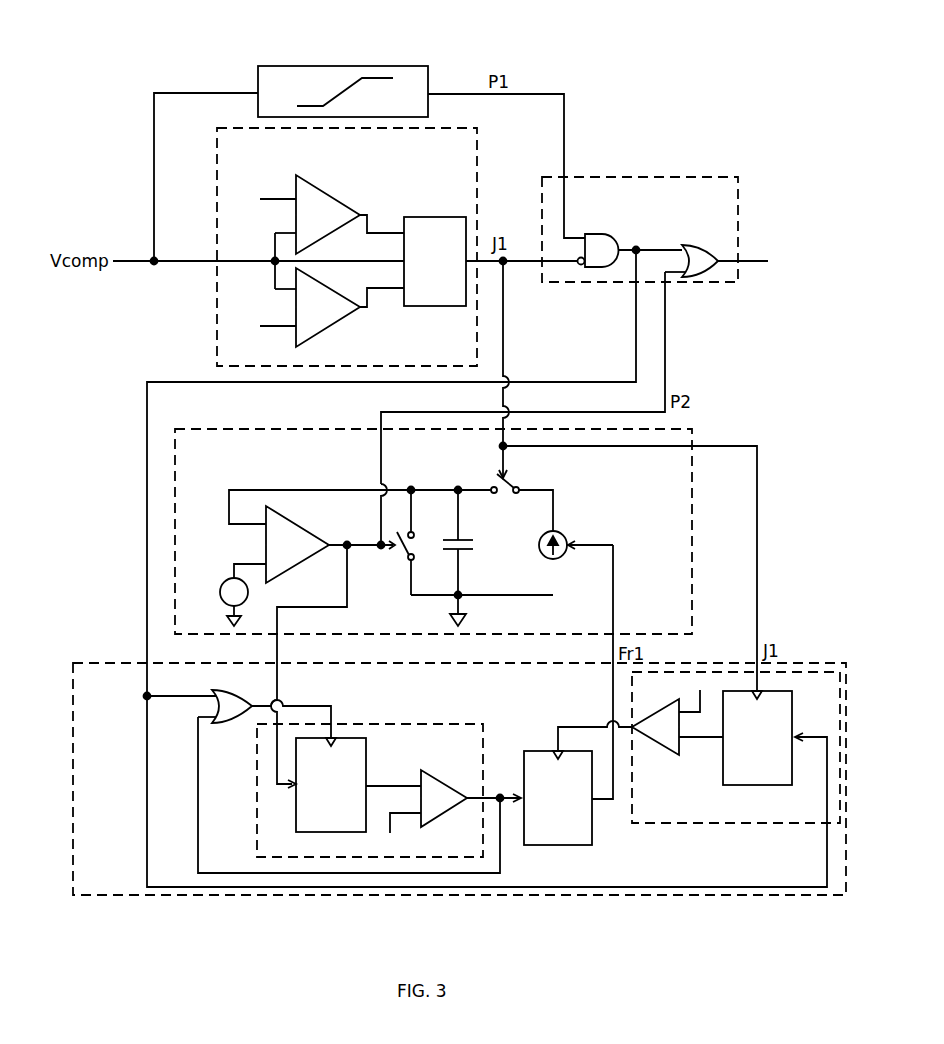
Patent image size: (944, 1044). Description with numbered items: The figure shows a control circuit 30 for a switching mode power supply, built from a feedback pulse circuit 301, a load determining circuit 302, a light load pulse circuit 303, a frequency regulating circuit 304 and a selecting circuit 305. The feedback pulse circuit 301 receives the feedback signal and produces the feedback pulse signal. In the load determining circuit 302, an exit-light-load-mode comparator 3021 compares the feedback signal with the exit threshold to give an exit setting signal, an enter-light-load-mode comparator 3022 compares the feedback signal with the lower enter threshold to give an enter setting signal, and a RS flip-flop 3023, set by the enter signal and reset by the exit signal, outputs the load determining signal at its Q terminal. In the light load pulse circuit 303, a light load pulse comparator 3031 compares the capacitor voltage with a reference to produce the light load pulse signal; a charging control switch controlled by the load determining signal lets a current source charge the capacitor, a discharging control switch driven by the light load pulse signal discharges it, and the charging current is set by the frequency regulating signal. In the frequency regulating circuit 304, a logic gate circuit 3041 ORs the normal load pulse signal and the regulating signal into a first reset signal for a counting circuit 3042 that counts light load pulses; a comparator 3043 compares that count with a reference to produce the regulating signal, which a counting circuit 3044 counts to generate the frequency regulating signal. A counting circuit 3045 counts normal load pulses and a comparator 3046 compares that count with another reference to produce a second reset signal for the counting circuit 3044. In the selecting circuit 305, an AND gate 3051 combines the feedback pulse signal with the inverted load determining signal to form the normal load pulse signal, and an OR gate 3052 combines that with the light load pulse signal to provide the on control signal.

The control circuit 30 is at (780, 42).
The feedback pulse circuit 301 is at (327, 66).
The load determining circuit 302 is at (347, 247).
The exit-light-load-mode comparator 3021 is at (340, 183).
The enter-light-load-mode comparator 3022 is at (340, 277).
The RS flip-flop 3023 is at (437, 204).
The light load pulse circuit 303 is at (433, 606).
The light load pulse comparator 3031 is at (306, 516).
The frequency regulating circuit 304 is at (459, 779).
The logic gate circuit 3041 is at (252, 687).
The counting circuit 3042 is at (327, 785).
The comparator 3043 is at (455, 772).
The counting circuit 3044 is at (558, 798).
The counting circuit 3045 is at (757, 738).
The comparator 3046 is at (664, 745).
The selecting circuit 305 is at (676, 229).
The AND gate 3051 is at (597, 234).
The OR gate 3052 is at (716, 237).